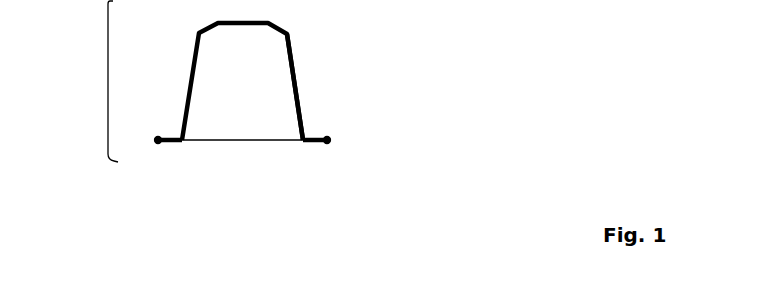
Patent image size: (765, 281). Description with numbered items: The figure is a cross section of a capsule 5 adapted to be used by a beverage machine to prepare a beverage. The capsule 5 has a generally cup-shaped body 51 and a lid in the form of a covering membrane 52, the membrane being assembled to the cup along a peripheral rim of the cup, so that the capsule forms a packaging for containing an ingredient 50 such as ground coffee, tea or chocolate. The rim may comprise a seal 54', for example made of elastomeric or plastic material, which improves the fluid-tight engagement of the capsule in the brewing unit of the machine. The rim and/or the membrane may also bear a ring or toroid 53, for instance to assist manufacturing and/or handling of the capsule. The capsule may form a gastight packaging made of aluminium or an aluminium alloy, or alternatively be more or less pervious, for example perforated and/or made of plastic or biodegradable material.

The capsule 5 is at (107, 19).
The ingredient 50 is at (242, 81).
The cup-shaped body 51 is at (298, 73).
The covering membrane 52 is at (245, 142).
The ring or toroid 53 is at (155, 145).
The seal 54' is at (248, 113).